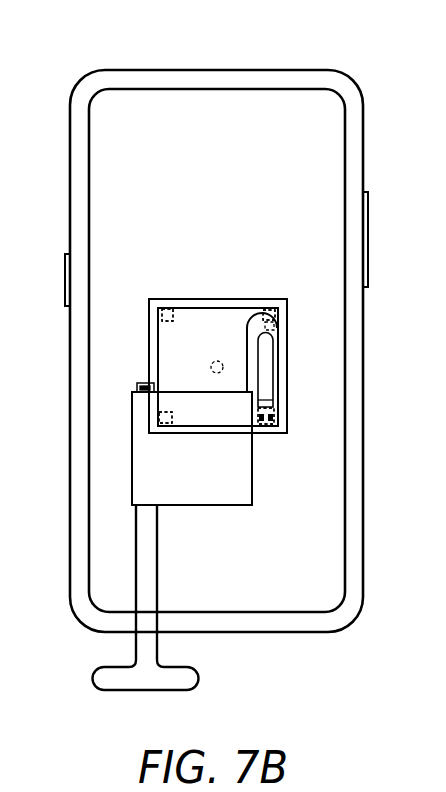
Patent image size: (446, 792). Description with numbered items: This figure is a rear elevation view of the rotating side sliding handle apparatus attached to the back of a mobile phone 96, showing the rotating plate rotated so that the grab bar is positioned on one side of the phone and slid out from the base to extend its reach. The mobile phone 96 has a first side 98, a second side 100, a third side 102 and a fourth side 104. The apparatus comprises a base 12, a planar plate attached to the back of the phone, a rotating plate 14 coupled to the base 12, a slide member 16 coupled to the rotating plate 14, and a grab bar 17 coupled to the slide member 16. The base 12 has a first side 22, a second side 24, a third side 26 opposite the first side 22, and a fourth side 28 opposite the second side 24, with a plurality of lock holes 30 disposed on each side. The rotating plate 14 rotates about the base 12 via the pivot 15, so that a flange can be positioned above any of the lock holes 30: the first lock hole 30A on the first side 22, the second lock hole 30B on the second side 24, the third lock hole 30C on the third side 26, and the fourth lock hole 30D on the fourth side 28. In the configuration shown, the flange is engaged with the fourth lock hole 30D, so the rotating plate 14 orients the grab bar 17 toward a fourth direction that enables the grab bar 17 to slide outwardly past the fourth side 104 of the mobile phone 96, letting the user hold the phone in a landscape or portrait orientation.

The second side of the mobile phone 100 is at (173, 70).
The mobile phone 96 is at (257, 89).
The third side of the mobile phone 102 is at (365, 170).
The first side of the mobile phone 98 is at (70, 347).
The base 12 is at (274, 308).
The rotating plate 14 is at (198, 316).
The pivot 15 is at (216, 360).
The slide member 16 is at (218, 506).
The grab bar 17 is at (136, 546).
The first side 22 is at (148, 340).
The second side 24 is at (256, 312).
The third side 26 is at (288, 394).
The fourth side 28 is at (262, 437).
The lock holes 30 is at (232, 345).
The first lock hole 30A is at (167, 425).
The second lock hole 30B is at (165, 306).
The third lock hole 30C is at (279, 314).
The fourth lock hole 30D is at (268, 434).
The fourth side of the mobile phone 104 is at (263, 633).